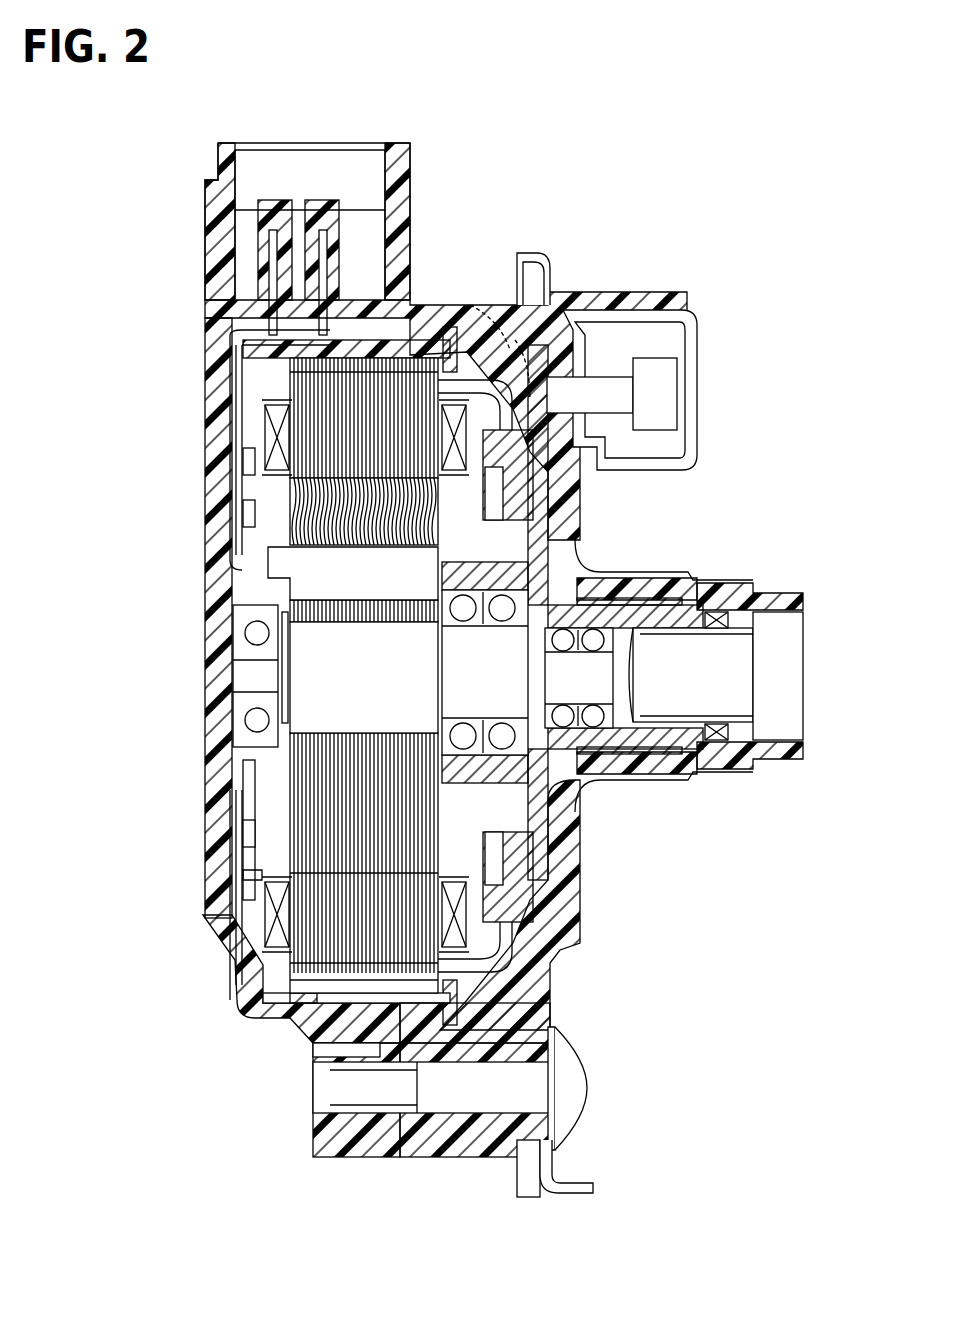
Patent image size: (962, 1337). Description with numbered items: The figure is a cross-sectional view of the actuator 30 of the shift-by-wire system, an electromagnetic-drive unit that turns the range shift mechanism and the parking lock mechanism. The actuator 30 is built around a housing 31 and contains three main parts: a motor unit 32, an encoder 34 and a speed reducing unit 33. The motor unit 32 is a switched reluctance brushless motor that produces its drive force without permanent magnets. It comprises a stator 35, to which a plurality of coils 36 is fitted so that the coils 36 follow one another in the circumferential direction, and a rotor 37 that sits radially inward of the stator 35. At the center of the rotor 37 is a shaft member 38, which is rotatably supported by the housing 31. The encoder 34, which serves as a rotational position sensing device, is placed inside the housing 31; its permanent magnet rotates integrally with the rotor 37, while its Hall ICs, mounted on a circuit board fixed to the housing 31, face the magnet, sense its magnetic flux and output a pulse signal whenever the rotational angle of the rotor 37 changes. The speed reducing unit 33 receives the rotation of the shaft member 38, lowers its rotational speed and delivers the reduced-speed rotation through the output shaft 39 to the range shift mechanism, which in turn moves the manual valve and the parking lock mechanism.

The actuator 30 is at (622, 222).
The housing 31 is at (208, 586).
The motor unit 32 is at (95, 340).
The speed reducing unit 33 is at (630, 548).
The encoder 34 is at (248, 797).
The stator 35 is at (290, 364).
The coils 36 is at (268, 428).
The rotor 37 is at (290, 512).
The shaft member 38 is at (318, 675).
The output shaft 39 is at (720, 612).